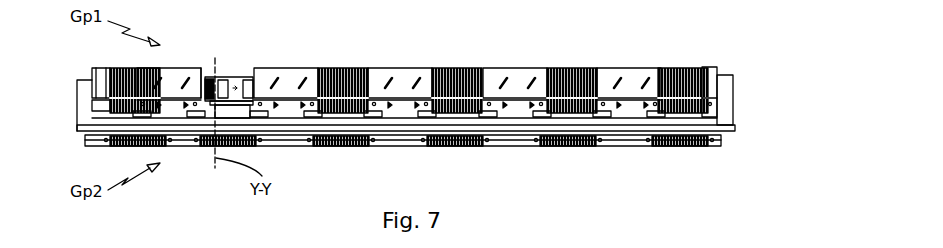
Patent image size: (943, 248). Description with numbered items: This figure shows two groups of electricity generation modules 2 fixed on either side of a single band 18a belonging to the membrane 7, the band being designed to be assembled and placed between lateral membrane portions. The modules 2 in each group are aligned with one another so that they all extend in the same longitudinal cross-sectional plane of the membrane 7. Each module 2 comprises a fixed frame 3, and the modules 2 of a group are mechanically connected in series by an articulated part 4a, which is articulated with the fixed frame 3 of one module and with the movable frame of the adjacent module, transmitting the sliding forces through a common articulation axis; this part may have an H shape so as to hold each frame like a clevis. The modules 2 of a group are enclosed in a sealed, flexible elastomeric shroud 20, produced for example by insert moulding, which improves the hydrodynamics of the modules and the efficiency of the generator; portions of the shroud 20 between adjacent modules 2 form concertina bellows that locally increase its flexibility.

The electricity generation module 2 is at (170, 70).
The fixed frame 3 is at (201, 72).
The articulated part 4a is at (236, 76).
The shroud 20 is at (333, 72).
The membrane 7 is at (78, 131).
The band 18a is at (726, 95).